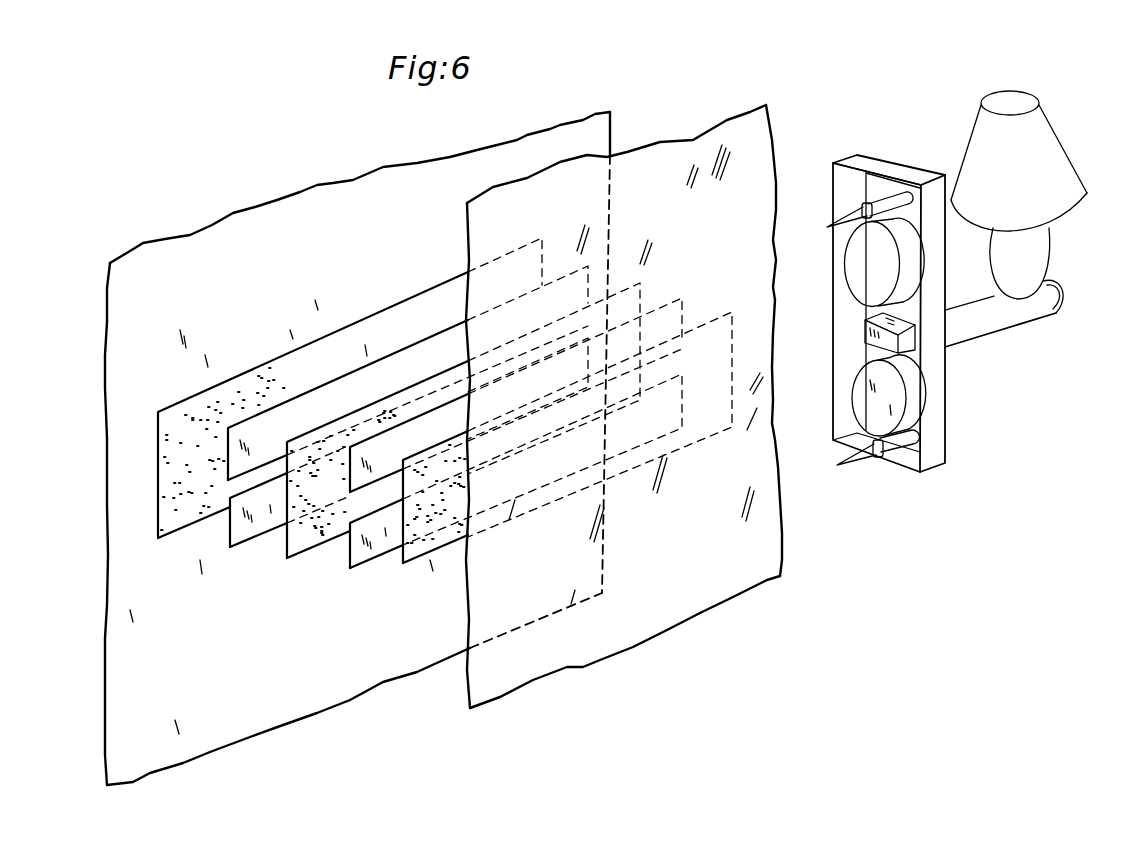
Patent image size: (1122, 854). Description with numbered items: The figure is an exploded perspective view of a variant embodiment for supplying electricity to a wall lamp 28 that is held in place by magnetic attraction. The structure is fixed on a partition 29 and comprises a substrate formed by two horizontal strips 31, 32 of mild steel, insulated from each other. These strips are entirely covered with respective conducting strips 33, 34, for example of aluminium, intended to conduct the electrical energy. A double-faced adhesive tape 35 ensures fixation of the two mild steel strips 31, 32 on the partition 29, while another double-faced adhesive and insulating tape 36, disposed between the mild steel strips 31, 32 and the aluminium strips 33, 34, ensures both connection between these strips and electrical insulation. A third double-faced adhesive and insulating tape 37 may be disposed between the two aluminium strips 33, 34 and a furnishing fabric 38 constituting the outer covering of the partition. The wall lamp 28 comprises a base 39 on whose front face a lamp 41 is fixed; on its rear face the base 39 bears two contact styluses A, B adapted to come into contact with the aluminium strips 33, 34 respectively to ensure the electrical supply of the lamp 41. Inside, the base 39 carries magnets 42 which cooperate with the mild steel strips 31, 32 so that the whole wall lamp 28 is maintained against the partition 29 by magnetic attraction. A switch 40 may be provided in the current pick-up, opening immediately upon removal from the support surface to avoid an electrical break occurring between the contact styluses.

The wall lamp 28 is at (917, 152).
The partition 29 is at (187, 253).
The mild steel strip 31 is at (228, 455).
The mild steel strip 32 is at (230, 525).
The conducting strip 33 is at (350, 472).
The conducting strip 34 is at (357, 557).
The adhesive tape 35 is at (160, 437).
The double-faced adhesive and insulating tape 36 is at (288, 541).
The third double-faced adhesive and insulating tape 37 is at (412, 566).
The furnishing fabric 38 is at (470, 688).
The base 39 is at (940, 432).
The switch 40 is at (908, 338).
The lamp 41 is at (1067, 163).
The magnets 42 is at (867, 290).
The contact stylus A is at (847, 214).
The contact stylus B is at (852, 468).